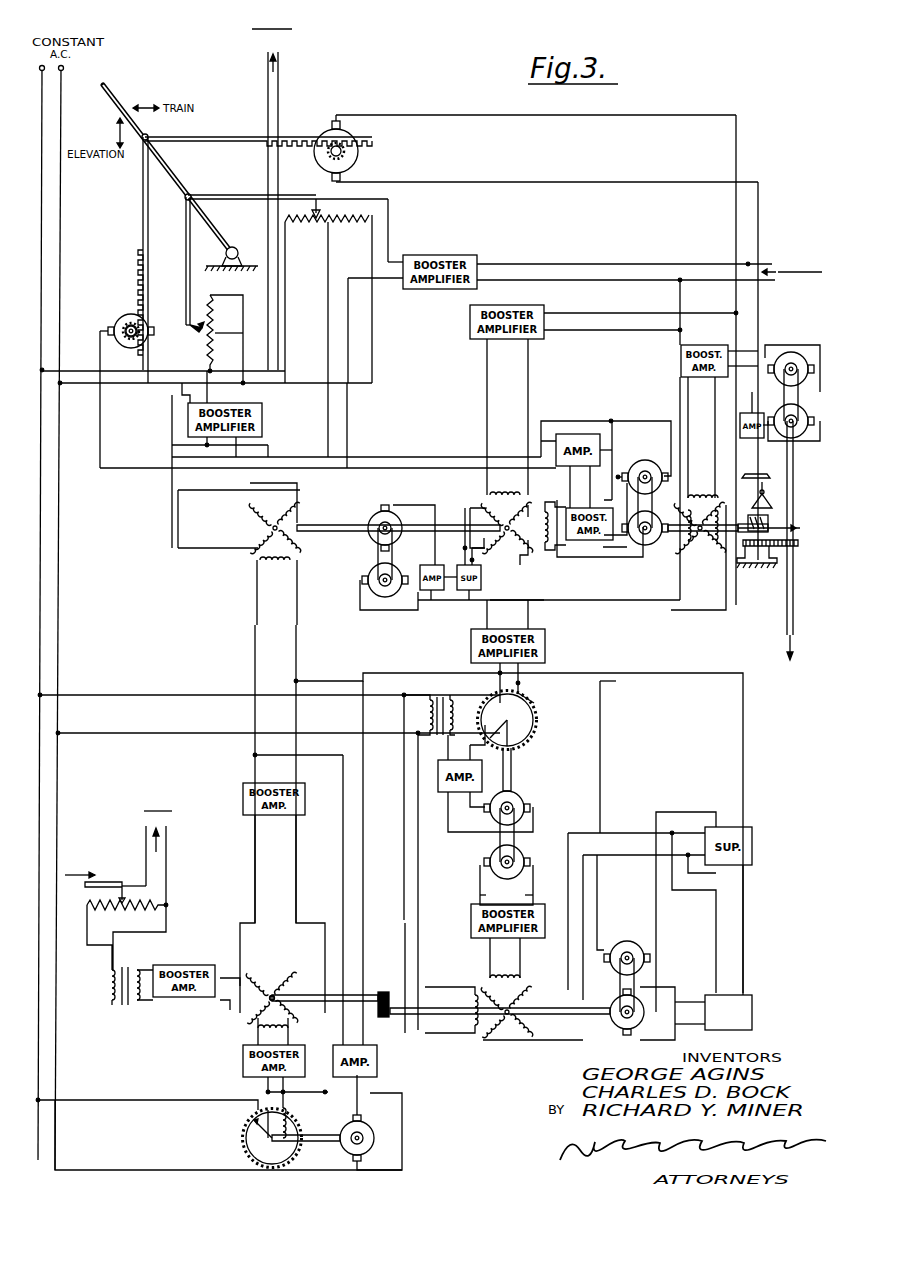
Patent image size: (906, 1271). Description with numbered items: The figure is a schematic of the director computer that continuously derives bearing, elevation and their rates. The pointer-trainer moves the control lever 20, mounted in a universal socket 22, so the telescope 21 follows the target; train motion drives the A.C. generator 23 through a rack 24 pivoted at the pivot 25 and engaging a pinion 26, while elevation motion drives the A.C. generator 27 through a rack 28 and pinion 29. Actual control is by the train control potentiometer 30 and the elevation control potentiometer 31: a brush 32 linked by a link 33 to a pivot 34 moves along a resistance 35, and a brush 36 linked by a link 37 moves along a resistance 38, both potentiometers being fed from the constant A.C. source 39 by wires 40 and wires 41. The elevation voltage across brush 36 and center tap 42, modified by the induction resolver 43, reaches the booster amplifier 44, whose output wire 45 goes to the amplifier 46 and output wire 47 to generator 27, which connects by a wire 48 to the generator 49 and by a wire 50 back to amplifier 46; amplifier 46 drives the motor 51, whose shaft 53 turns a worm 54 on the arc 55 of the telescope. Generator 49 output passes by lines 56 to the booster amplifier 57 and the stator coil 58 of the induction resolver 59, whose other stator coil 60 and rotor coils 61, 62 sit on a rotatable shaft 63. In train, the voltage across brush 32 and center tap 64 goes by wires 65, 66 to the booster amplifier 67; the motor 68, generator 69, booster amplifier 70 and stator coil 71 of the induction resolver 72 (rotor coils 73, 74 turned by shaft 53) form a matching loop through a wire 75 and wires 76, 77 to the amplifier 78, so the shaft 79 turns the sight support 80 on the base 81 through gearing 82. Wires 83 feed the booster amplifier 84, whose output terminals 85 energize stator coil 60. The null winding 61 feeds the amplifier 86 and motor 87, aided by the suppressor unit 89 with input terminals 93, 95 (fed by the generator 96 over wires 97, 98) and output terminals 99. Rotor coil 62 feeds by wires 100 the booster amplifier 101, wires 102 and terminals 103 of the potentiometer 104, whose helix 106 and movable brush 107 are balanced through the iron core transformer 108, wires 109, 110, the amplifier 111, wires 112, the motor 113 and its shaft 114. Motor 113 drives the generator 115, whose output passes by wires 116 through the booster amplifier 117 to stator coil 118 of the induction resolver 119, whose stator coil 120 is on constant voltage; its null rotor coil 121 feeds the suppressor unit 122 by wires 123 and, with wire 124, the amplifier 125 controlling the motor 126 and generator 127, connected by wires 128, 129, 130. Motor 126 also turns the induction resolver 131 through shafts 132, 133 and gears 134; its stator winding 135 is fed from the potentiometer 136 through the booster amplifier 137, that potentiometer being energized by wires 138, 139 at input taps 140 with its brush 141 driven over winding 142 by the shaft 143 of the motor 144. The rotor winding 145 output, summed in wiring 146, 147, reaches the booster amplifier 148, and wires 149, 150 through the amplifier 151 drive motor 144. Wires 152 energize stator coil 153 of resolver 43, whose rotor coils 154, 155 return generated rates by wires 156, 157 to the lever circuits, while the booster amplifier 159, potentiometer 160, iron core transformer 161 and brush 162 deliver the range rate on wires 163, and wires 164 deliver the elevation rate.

The control lever 20 is at (117, 95).
The telescope 21 is at (768, 478).
The universal socket 22 is at (244, 254).
The A.C. generator 23 is at (353, 138).
The rack 24 is at (245, 138).
The pivot 25 is at (148, 135).
The pinion 26 is at (347, 154).
The A.C. generator 27 is at (116, 320).
The rack 28 is at (142, 215).
The pinion 29 is at (133, 318).
The train control potentiometer 30 is at (338, 214).
The elevation control potentiometer 31 is at (218, 324).
The brush 32 is at (322, 205).
The link 33 is at (248, 197).
The pivot 34 is at (190, 194).
The resistance 35 is at (340, 232).
The brush 36 is at (196, 328).
The link 37 is at (186, 250).
The resistance 38 is at (200, 309).
The constant A.C. source 39 is at (57, 548).
The wires 40 is at (286, 276).
The wires 41 is at (215, 362).
The center tap 42 is at (240, 327).
The induction resolver 43 is at (248, 514).
The booster amplifier 44 is at (188, 420).
The output wire 45 is at (385, 457).
The amplifier 46 is at (583, 424).
The output wire 47 is at (192, 442).
The wire 48 is at (118, 473).
The generator 49 is at (656, 450).
The wire 50 is at (652, 420).
The motor 51 is at (645, 522).
The shaft 53 is at (662, 550).
The worm 54 is at (770, 510).
The arc 55 is at (776, 498).
The lines 56 is at (606, 548).
The booster amplifier 57 is at (586, 552).
The stator coil 58 is at (519, 516).
The induction resolver 59 is at (552, 548).
The stator coil 60 is at (528, 498).
The rotor null winding 61 is at (505, 495).
The rotor coil 62 is at (520, 570).
The rotatable shaft 63 is at (442, 520).
The center tap 64 is at (326, 230).
The wire 65 is at (395, 255).
The wire 66 is at (385, 290).
The booster amplifier 67 is at (450, 255).
The motor 68 is at (805, 415).
The generator 69 is at (792, 355).
The booster amplifier 70 is at (718, 340).
The stator coil 71 is at (690, 500).
The induction resolver 72 is at (710, 562).
The rotor coil 73 is at (704, 498).
The rotor coil 74 is at (683, 310).
The wire 75 is at (736, 219).
The wire 76 is at (672, 258).
The wire 77 is at (700, 182).
The amplifier 78 is at (756, 412).
The shaft 79 is at (793, 462).
The sight support 80 is at (795, 548).
The base 81 is at (760, 568).
The gearing 82 is at (772, 568).
The wires 83 is at (618, 330).
The booster amplifier 84 is at (510, 305).
The output terminals 85 is at (528, 395).
The amplifier 86 is at (428, 592).
The motor 87 is at (383, 508).
The suppressor unit 89 is at (481, 587).
The input terminals 93 is at (463, 548).
The input terminals 95 is at (475, 592).
The generator 96 is at (362, 588).
The wire 97 is at (623, 606).
The wire 98 is at (400, 595).
The output terminals 99 is at (450, 592).
The wires 100 is at (478, 620).
The booster amplifier 101 is at (545, 640).
The wires 102 is at (532, 692).
The terminals 103 is at (530, 706).
The potentiometer 104 is at (540, 740).
The helix 106 is at (520, 745).
The movable brush 107 is at (525, 733).
The iron core transformer 108 is at (437, 695).
The wire 109 is at (418, 742).
The wire 110 is at (457, 747).
The amplifier 111 is at (432, 780).
The wires 112 is at (450, 798).
The motor 113 is at (528, 812).
The shaft 114 is at (512, 790).
The generator 115 is at (490, 866).
The wires 116 is at (506, 885).
The booster amplifier 117 is at (471, 914).
The stator coil 118 is at (510, 975).
The induction resolver 119 is at (510, 1018).
The stator coil 120 is at (476, 995).
The null rotor coil 121 is at (485, 1025).
The suppressor unit 122 is at (752, 837).
The wires 123 is at (640, 855).
The wire 124 is at (743, 947).
The amplifier 125 is at (752, 1003).
The motor 126 is at (612, 1025).
The generator 127 is at (606, 966).
The wire 128 is at (743, 752).
The wire 129 is at (602, 770).
The wire 130 is at (700, 812).
The induction resolver 131 is at (245, 1030).
The shaft 132 is at (428, 1020).
The shaft 133 is at (350, 975).
The gears 134 is at (385, 990).
The stator winding 135 is at (300, 1030).
The potentiometer 136 is at (238, 1140).
The booster amplifier 137 is at (243, 1077).
The wires 138 is at (237, 1012).
The wires 139 is at (130, 1170).
The input taps 140 is at (284, 1120).
The brush 141 is at (240, 1122).
The winding 142 is at (246, 1156).
The shaft 143 is at (335, 1150).
The motor 144 is at (378, 1137).
The rotor winding 145 is at (273, 980).
The wiring 146 is at (254, 846).
The wiring 147 is at (318, 883).
The booster amplifier 148 is at (243, 790).
The wire 149 is at (343, 838).
The wire 150 is at (370, 866).
The amplifier 151 is at (376, 1068).
The wires 152 is at (253, 655).
The stator coil 153 is at (270, 572).
The rotor coil 154 is at (258, 550).
The rotor coil 155 is at (262, 515).
The wires 156 is at (176, 490).
The wires 157 is at (335, 414).
The booster amplifier 159 is at (198, 954).
The potentiometer 160 is at (115, 920).
The iron core transformer 161 is at (128, 1008).
The brush 162 is at (116, 895).
The wires 163 is at (146, 870).
The wires 164 is at (280, 90).